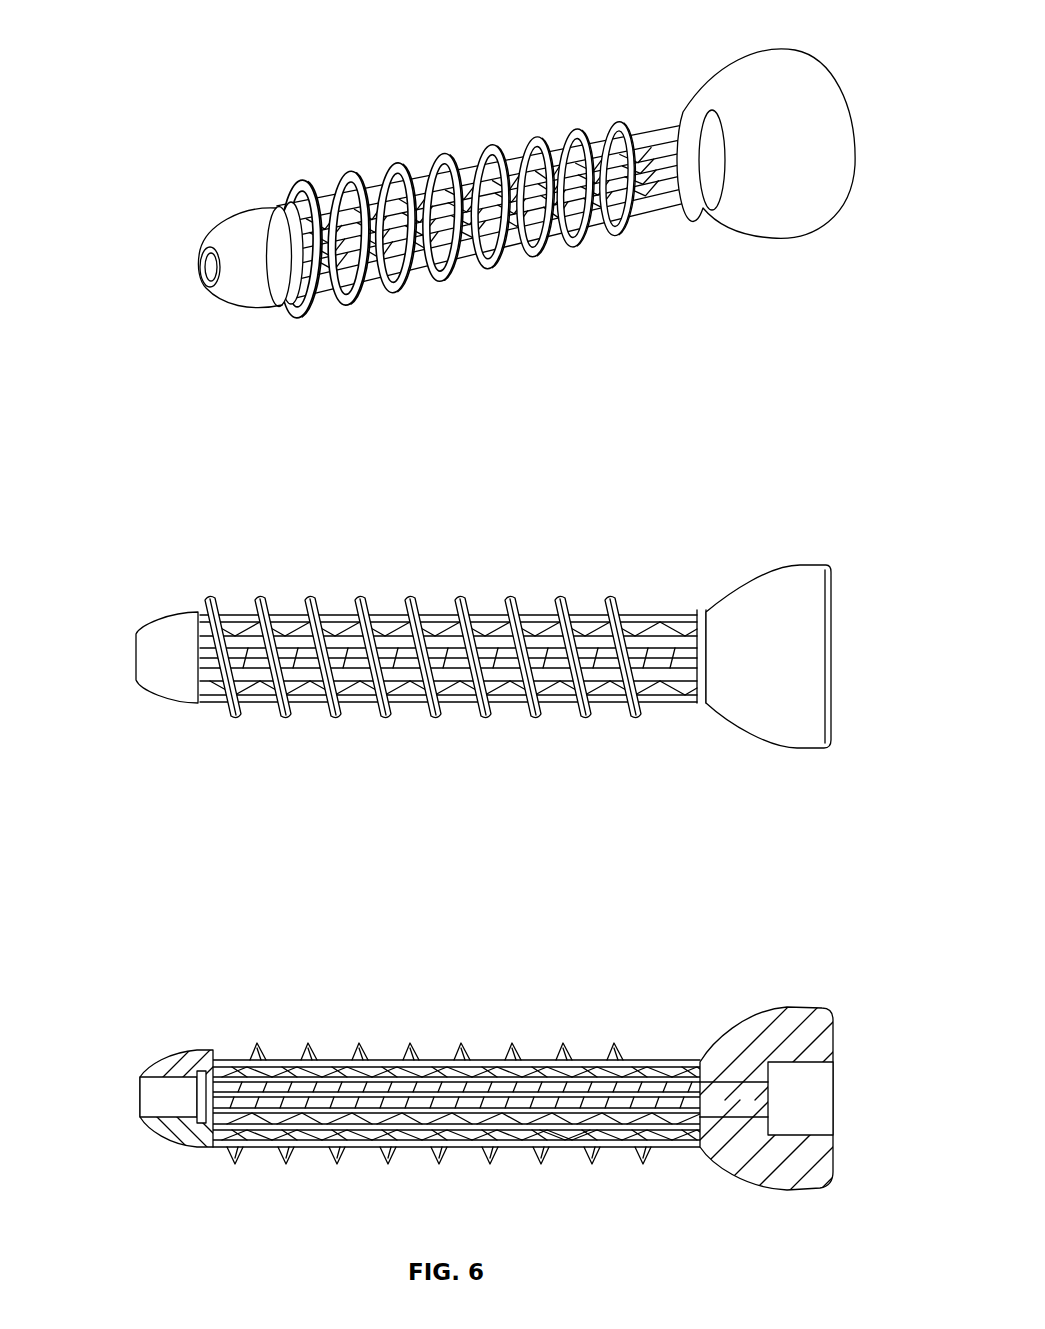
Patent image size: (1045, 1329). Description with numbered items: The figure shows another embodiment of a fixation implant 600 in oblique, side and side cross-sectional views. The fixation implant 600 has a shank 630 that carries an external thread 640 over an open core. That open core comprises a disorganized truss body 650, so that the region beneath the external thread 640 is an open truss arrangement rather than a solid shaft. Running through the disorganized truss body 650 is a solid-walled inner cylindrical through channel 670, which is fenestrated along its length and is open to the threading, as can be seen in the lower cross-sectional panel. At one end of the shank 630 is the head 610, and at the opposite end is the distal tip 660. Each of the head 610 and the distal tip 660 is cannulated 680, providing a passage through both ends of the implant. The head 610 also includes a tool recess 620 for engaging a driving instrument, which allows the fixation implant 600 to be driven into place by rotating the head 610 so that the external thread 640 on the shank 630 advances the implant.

The fixation implant 600 is at (229, 134).
The head 610 is at (742, 58).
The tool recess 620 is at (815, 1070).
The shank 630 is at (668, 112).
The external thread 640 is at (580, 128).
The disorganized truss body 650 is at (440, 160).
The distal tip 660 is at (213, 232).
The inner cylindrical through channel 670 is at (570, 1120).
The cannulation 680 is at (208, 272).